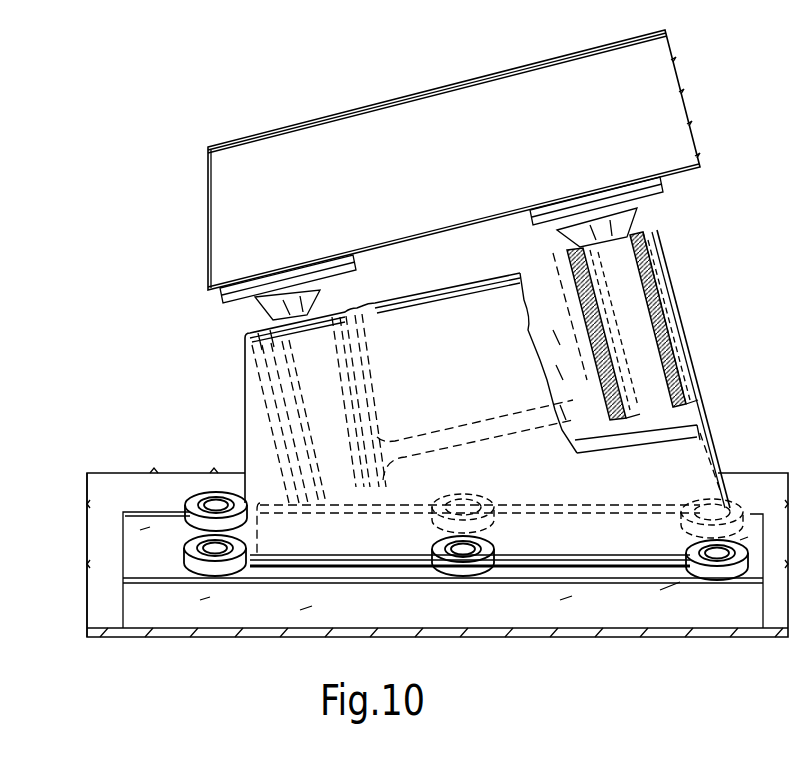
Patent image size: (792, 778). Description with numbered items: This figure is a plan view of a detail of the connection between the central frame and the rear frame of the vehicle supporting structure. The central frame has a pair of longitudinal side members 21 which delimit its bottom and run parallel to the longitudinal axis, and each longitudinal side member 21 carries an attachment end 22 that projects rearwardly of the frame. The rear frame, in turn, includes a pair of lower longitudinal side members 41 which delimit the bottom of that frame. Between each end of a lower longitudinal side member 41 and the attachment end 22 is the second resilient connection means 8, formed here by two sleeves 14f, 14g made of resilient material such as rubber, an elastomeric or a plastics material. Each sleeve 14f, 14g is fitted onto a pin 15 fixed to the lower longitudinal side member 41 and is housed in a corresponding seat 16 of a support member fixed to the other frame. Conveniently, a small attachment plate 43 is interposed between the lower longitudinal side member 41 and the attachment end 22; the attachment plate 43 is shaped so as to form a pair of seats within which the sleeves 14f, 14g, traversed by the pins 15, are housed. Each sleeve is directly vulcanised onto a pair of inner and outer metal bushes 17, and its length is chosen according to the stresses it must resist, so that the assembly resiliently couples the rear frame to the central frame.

The lower longitudinal side member 41 is at (226, 214).
The pin 15 is at (332, 292).
The second resilient connection means 8 is at (262, 383).
The sleeve 14f is at (250, 332).
The sleeve 14g is at (672, 352).
The seat 16 is at (658, 418).
The inner and outer metal bushes 17 is at (624, 425).
The attachment end 22 is at (150, 487).
The longitudinal side member 21 is at (113, 548).
The attachment plate 43 is at (525, 545).